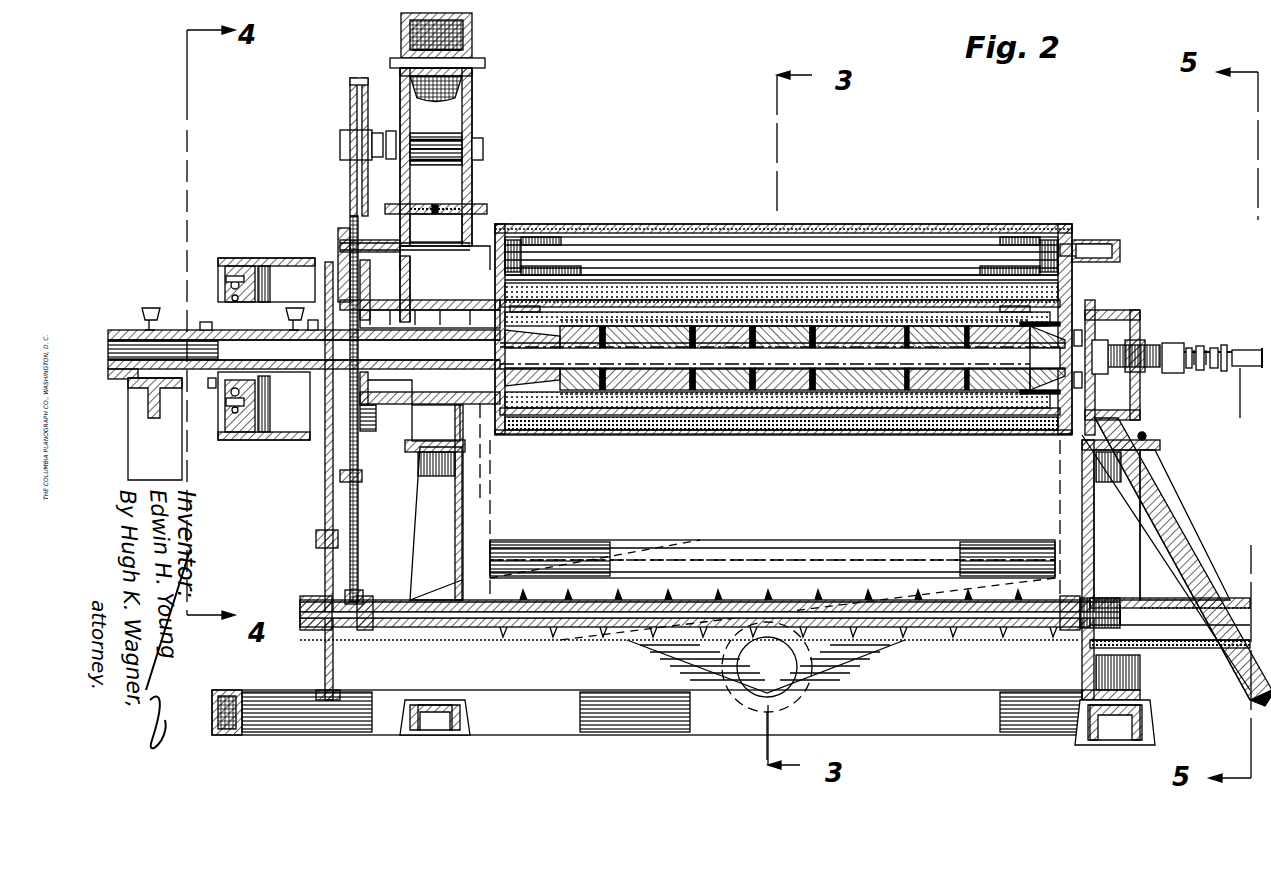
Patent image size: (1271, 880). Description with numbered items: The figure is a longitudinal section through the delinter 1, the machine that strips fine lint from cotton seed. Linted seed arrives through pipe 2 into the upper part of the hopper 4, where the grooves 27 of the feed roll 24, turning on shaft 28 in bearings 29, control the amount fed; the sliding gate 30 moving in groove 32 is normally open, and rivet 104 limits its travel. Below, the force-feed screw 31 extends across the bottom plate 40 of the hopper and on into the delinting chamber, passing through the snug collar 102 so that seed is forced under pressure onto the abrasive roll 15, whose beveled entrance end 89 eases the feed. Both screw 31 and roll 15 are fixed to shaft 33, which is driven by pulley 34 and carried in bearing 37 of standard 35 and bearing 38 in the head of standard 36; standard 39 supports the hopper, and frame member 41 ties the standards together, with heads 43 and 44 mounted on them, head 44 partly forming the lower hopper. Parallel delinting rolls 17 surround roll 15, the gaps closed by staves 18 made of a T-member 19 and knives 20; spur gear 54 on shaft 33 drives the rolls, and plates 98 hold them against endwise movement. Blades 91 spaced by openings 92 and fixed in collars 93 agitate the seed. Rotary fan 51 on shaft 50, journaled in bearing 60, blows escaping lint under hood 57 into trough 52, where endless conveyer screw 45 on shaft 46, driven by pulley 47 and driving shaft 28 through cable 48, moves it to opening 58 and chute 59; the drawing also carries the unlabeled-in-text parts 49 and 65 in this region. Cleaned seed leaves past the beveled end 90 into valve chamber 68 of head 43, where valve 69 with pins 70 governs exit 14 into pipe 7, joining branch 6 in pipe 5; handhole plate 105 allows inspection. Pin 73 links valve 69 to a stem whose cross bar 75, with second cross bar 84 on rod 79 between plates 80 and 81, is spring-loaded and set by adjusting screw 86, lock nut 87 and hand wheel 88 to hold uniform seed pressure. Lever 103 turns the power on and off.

The delinter 1 is at (1028, 230).
The pipe 2 is at (476, 52).
The hopper 4 is at (438, 118).
The pipe 5 is at (1240, 672).
The branch 6 is at (1150, 648).
The pipe 7 is at (1170, 510).
The exit 14 is at (720, 686).
The abrasive roll 15 is at (915, 395).
The delinting rolls 17 is at (530, 240).
The staves 18 is at (843, 212).
The T-member 19 is at (862, 326).
The knives 20 is at (630, 300).
The feed roll 24 is at (466, 134).
The grooves 27 is at (430, 166).
The shaft 28 is at (484, 150).
The bearings 29 is at (392, 130).
The sliding gate 30 is at (420, 214).
The force-feed screw 31 is at (420, 326).
The groove 32 is at (395, 204).
The shaft 33 is at (112, 322).
The pulley 34 is at (272, 438).
The standard 35 is at (155, 429).
The standard 36 is at (1121, 570).
The bearing 37 is at (130, 372).
The bearing 38 is at (1148, 345).
The standard 39 is at (436, 502).
The bottom plate 40 is at (404, 440).
The frame member 41 is at (683, 717).
The head 43 is at (1068, 438).
The head 44 is at (404, 455).
The endless conveyer screw 45 is at (372, 300).
The shaft 46 is at (400, 628).
The pulley 47 is at (318, 655).
The cable 48 is at (334, 538).
The drive shaft 49 is at (338, 270).
The shaft 50 is at (425, 262).
The rotary fan 51 is at (640, 237).
The trough 52 is at (775, 520).
The spur gear 54 is at (376, 418).
The hood 57 is at (760, 232).
The opening 58 is at (740, 578).
The chute 59 is at (870, 672).
The bearing 60 is at (1116, 244).
The screw conveyor 65 is at (900, 560).
The valve chamber 68 is at (1104, 372).
The valve 69 is at (1093, 310).
The pins 70 is at (1072, 363).
The pin 73 is at (1098, 345).
The cross bar 75 is at (1200, 372).
The rod 79 is at (1202, 352).
The plate 80 is at (1185, 380).
The plate 81 is at (1224, 372).
The cross bar 84 is at (1232, 348).
The adjusting screw 86 is at (1250, 377).
The lock nut 87 is at (1231, 405).
The hand wheel 88 is at (1262, 345).
The entrance end 89 is at (530, 290).
The beveled end 90 is at (1030, 400).
The blades 91 is at (603, 326).
The openings 92 is at (650, 392).
The collars 93 is at (615, 408).
The plates 98 is at (505, 290).
The collar 102 is at (476, 490).
The lever 103 is at (210, 300).
The rivet 104 is at (440, 207).
The handhole plate 105 is at (1148, 437).